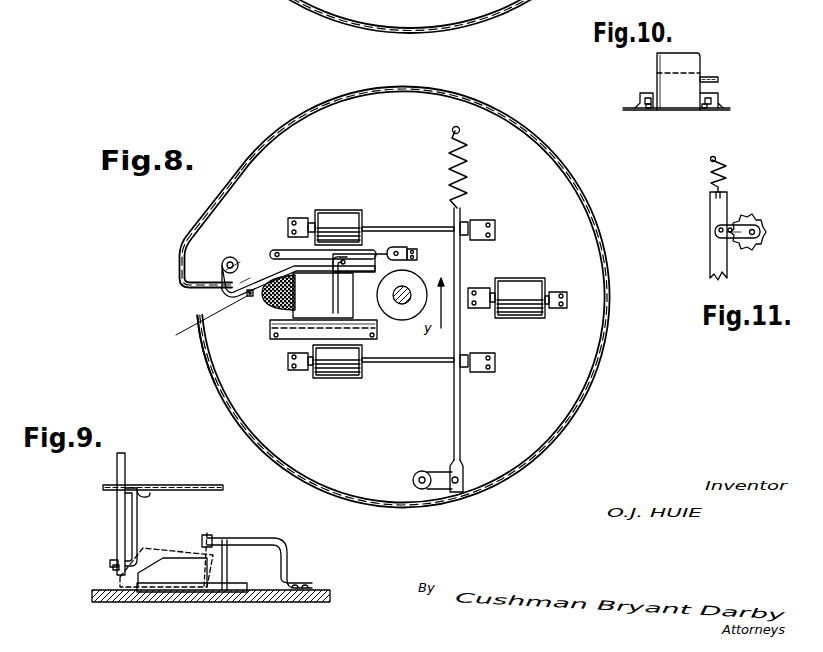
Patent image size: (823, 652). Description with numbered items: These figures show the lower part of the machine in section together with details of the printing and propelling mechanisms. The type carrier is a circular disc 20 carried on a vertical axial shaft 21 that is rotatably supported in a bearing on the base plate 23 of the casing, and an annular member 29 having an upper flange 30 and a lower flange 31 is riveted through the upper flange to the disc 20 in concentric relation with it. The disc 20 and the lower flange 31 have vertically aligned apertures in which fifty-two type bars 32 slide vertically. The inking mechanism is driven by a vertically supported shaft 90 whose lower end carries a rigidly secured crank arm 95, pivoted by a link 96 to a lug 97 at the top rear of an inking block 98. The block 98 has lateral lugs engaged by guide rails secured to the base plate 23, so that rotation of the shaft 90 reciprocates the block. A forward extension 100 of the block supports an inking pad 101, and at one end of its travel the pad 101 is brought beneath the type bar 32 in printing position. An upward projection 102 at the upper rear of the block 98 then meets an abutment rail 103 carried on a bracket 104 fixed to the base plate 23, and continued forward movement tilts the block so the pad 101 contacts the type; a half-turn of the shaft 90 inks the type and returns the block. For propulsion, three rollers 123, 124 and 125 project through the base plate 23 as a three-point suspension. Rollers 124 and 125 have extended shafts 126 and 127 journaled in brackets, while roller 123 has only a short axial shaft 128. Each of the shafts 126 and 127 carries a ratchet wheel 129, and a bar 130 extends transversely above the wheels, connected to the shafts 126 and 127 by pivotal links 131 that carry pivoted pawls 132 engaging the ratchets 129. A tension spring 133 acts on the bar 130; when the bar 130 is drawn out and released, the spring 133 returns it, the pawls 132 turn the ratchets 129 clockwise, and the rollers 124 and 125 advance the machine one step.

In FIG. 9, the circular disc 20 is at (182, 483).
In FIG. 8, the vertical axial shaft 21 is at (406, 290).
In FIG. 8, the base plate 23 is at (366, 437).
In FIG. 9, the base plate 23 is at (277, 603).
In FIG. 9, the annular member 29 is at (139, 521).
In FIG. 9, the upper flange 30 is at (150, 496).
In FIG. 9, the lower flange 31 is at (112, 562).
In FIG. 8, the type bar 32 is at (246, 294).
In FIG. 9, the type bar 32 is at (122, 456).
In FIG. 8, the shaft 90 is at (238, 249).
In FIG. 8, the crank arm 95 is at (241, 259).
In FIG. 8, the link 96 is at (252, 274).
In FIG. 8, the lug 97 is at (353, 270).
In FIG. 10, the lug 97 is at (703, 77).
In FIG. 8, the block 98 is at (311, 341).
In FIG. 9, the block 98 is at (192, 605).
In FIG. 10, the block 98 is at (645, 81).
In FIG. 9, the forward extension 100 is at (120, 592).
In FIG. 8, the inking pad 101 is at (282, 302).
In FIG. 9, the inking pad 101 is at (113, 568).
In FIG. 8, the upward projection 102 is at (353, 300).
In FIG. 9, the upward projection 102 is at (238, 531).
In FIG. 10, the upward projection 102 is at (688, 62).
In FIG. 8, the abutment rail 103 is at (335, 294).
In FIG. 9, the abutment rail 103 is at (204, 540).
In FIG. 8, the bracket 104 is at (407, 252).
In FIG. 9, the bracket 104 is at (285, 555).
In FIG. 8, the roller 123 is at (528, 275).
In FIG. 8, the roller 124 is at (340, 217).
In FIG. 8, the roller 125 is at (340, 380).
In FIG. 8, the extended shaft 126 is at (398, 221).
In FIG. 8, the extended shaft 127 is at (420, 362).
In FIG. 8, the axial shaft 128 is at (550, 290).
In FIG. 11, the ratchet wheel 129 is at (757, 249).
In FIG. 8, the bar 130 is at (456, 408).
In FIG. 11, the bar 130 is at (712, 212).
In FIG. 11, the pivotal link 131 is at (718, 232).
In FIG. 11, the pawl 132 is at (734, 222).
In FIG. 8, the tension spring 133 is at (465, 179).
In FIG. 11, the tension spring 133 is at (722, 160).